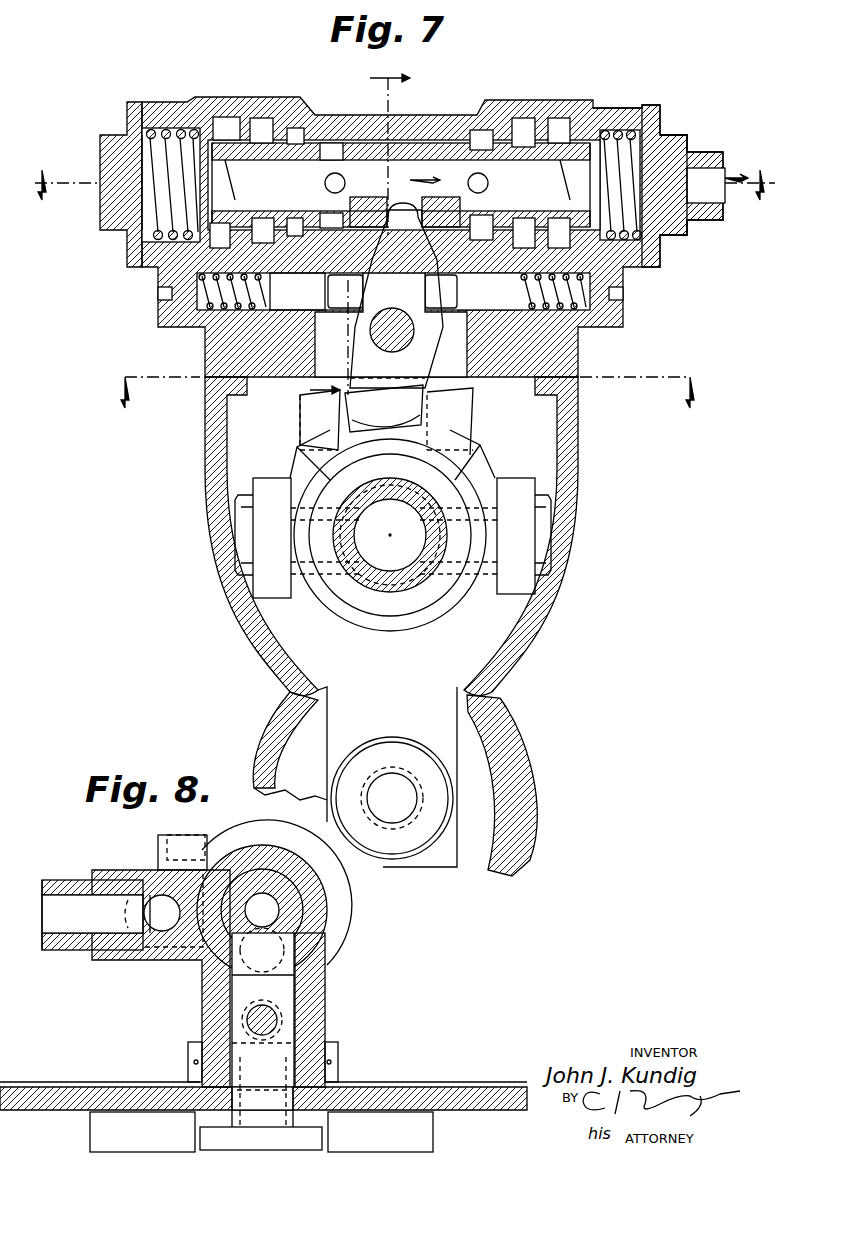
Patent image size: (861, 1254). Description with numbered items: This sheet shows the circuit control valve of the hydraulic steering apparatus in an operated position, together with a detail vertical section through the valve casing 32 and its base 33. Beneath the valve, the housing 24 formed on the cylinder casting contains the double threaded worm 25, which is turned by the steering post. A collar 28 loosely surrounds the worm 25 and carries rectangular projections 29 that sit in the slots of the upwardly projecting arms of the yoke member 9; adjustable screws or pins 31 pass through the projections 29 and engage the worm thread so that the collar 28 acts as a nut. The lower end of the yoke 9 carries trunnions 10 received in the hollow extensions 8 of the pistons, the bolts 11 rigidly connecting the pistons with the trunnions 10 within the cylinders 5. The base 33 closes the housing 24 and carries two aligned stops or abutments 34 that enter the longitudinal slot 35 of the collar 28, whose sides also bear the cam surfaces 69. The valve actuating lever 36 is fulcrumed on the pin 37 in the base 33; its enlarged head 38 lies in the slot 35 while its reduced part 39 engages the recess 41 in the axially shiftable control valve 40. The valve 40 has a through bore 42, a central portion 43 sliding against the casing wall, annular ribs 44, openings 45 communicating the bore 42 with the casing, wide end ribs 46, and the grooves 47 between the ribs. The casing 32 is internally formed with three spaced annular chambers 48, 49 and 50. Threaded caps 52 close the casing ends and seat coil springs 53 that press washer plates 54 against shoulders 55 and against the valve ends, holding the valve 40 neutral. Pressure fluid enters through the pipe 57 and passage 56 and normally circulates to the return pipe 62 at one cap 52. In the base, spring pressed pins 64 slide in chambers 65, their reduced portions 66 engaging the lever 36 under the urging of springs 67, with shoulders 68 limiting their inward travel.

In FIG. 7, the cylinders 5 is at (535, 785).
In FIG. 7, the hollow boss or extension 8 is at (353, 236).
In FIG. 7, the yoke member 9 is at (355, 766).
In FIG. 7, the trunnions 10 is at (400, 758).
In FIG. 7, the bolts 11 is at (402, 377).
In FIG. 7, the housing 24 is at (580, 452).
In FIG. 7, the double threaded screw or worm 25 is at (360, 500).
In FIG. 7, the collar 28 is at (462, 462).
In FIG. 7, the rectangular projections 29 is at (292, 475).
In FIG. 7, the adjustable screws or pins 31 is at (235, 535).
In FIG. 7, the control valve casing 32 is at (418, 118).
In FIG. 8, the control valve casing 32 is at (268, 850).
In FIG. 8, the base 33 is at (418, 1095).
In FIG. 8, the stops or abutments 34 is at (261, 1132).
In FIG. 7, the slot 35 is at (340, 428).
In FIG. 7, the valve actuating lever 36 is at (396, 295).
In FIG. 8, the valve actuating lever 36 is at (278, 997).
In FIG. 7, the pin 37 is at (385, 343).
In FIG. 8, the pin 37 is at (340, 1055).
In FIG. 7, the enlarged head 38 is at (385, 405).
In FIG. 8, the enlarged head 38 is at (261, 1138).
In FIG. 7, the reduced part 39 is at (404, 220).
In FIG. 8, the reduced part 39 is at (205, 985).
In FIG. 7, the control valve 40 is at (404, 185).
In FIG. 8, the control valve 40 is at (300, 915).
In FIG. 7, the slot or recess 41 is at (420, 182).
In FIG. 8, the slot or recess 41 is at (225, 940).
In FIG. 7, the bore 42 is at (368, 200).
In FIG. 8, the bore 42 is at (262, 910).
In FIG. 8, the central portion 43 is at (285, 895).
In FIG. 7, the annular ribs 44 is at (330, 140).
In FIG. 7, the openings 45 is at (325, 183).
In FIG. 8, the openings 45 is at (330, 955).
In FIG. 7, the second annular rib 46 is at (225, 160).
In FIG. 7, the annular channel or groove 47 is at (272, 222).
In FIG. 7, the annular chamber 48 is at (232, 117).
In FIG. 7, the annular chamber 49 is at (268, 118).
In FIG. 7, the annular chamber 50 is at (300, 128).
In FIG. 7, the threaded caps or plugs 52 is at (112, 138).
In FIG. 7, the coil springs 53 is at (160, 150).
In FIG. 7, the annular washer plates 54 is at (135, 225).
In FIG. 7, the shoulders 55 is at (208, 120).
In FIG. 8, the bore or passage 56 is at (158, 900).
In FIG. 8, the conduit or pipe 57 is at (92, 915).
In FIG. 7, the return pipe 62 is at (720, 205).
In FIG. 7, the spring pressed pins or plungers 64 is at (392, 292).
In FIG. 7, the cylindrical chambers 65 is at (205, 332).
In FIG. 7, the cylindrically reduced portions 66 is at (392, 291).
In FIG. 8, the cylindrically reduced portions 66 is at (272, 1018).
In FIG. 7, the coil springs 67 is at (172, 300).
In FIG. 7, the shoulders 68 is at (391, 325).
In FIG. 7, the cam surfaces 69 is at (318, 408).